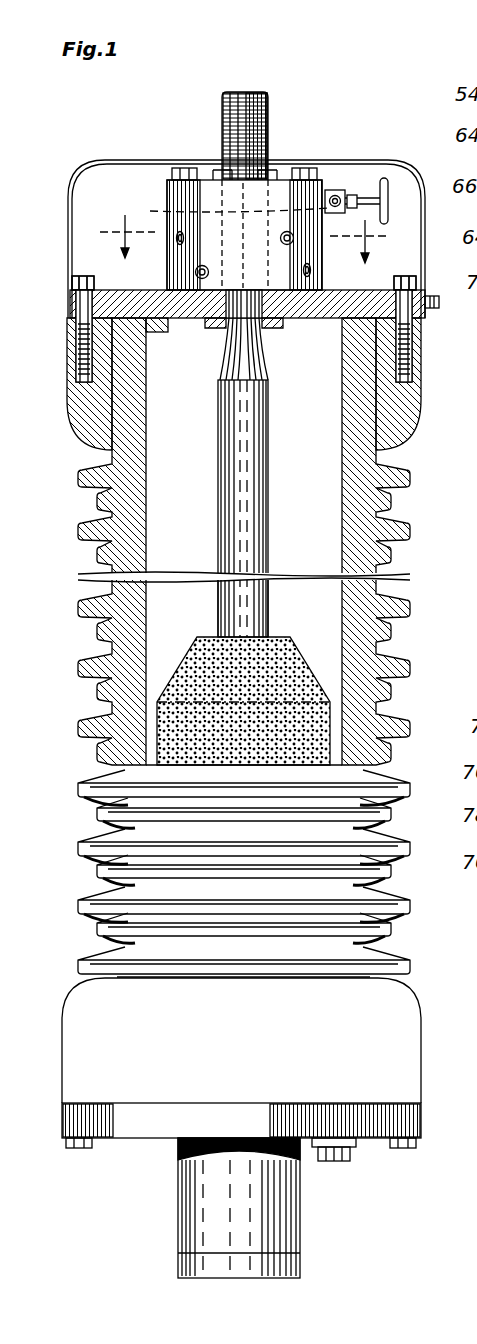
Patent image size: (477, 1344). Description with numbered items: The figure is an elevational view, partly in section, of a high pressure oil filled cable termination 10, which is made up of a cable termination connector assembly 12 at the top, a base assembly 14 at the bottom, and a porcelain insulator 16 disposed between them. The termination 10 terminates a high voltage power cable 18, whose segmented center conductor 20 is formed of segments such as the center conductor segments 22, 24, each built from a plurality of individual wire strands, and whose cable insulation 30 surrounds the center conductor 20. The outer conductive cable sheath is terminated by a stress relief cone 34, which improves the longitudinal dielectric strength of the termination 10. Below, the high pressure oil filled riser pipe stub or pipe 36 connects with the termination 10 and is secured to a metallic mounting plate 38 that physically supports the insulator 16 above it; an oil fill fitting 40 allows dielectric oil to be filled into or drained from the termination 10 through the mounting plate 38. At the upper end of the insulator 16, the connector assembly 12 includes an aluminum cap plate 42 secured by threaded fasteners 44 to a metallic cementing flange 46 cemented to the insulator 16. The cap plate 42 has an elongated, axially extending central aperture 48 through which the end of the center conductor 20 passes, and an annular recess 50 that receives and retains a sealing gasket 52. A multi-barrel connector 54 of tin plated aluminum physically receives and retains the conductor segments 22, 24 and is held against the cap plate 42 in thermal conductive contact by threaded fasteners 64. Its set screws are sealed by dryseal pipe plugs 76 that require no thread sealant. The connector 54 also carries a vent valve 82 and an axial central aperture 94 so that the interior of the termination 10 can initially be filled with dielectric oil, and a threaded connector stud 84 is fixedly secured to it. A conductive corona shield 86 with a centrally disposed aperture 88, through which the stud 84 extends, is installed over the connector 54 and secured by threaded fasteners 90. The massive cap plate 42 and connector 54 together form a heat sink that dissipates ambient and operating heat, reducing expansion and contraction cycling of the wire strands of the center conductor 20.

The high pressure oil filled cable termination 10 is at (72, 593).
The cable termination connector assembly 12 is at (335, 111).
The base assembly 14 is at (152, 1224).
The porcelain insulator 16 is at (245, 626).
The power cable 18 is at (216, 535).
The segmented center conductor 20 is at (245, 345).
The center conductor segment 22 is at (223, 358).
The center conductor segment 24 is at (267, 350).
The cable insulation 30 is at (216, 413).
The stress relief cone 34 is at (292, 662).
The riser pipe stub 36 is at (300, 1233).
The mounting plate 38 is at (157, 1128).
The oil fill fitting 40 is at (332, 1163).
The cap plate 42 is at (100, 286).
The threaded fasteners 44 is at (82, 340).
The cementing flange 46 is at (400, 438).
The central aperture 48 is at (215, 320).
The annular recess 50 is at (285, 300).
The sealing gasket 52 is at (163, 333).
The multi-barrel connector 54 is at (167, 182).
The threaded fasteners 64 is at (188, 166).
The pipe plugs 76 is at (196, 273).
The vent valve 82 is at (340, 188).
The connector stud 84 is at (268, 105).
The corona shield 86 is at (82, 160).
The centrally disposed aperture 88 is at (227, 150).
The threaded fasteners 90 is at (439, 303).
The axial central aperture 94 is at (225, 200).